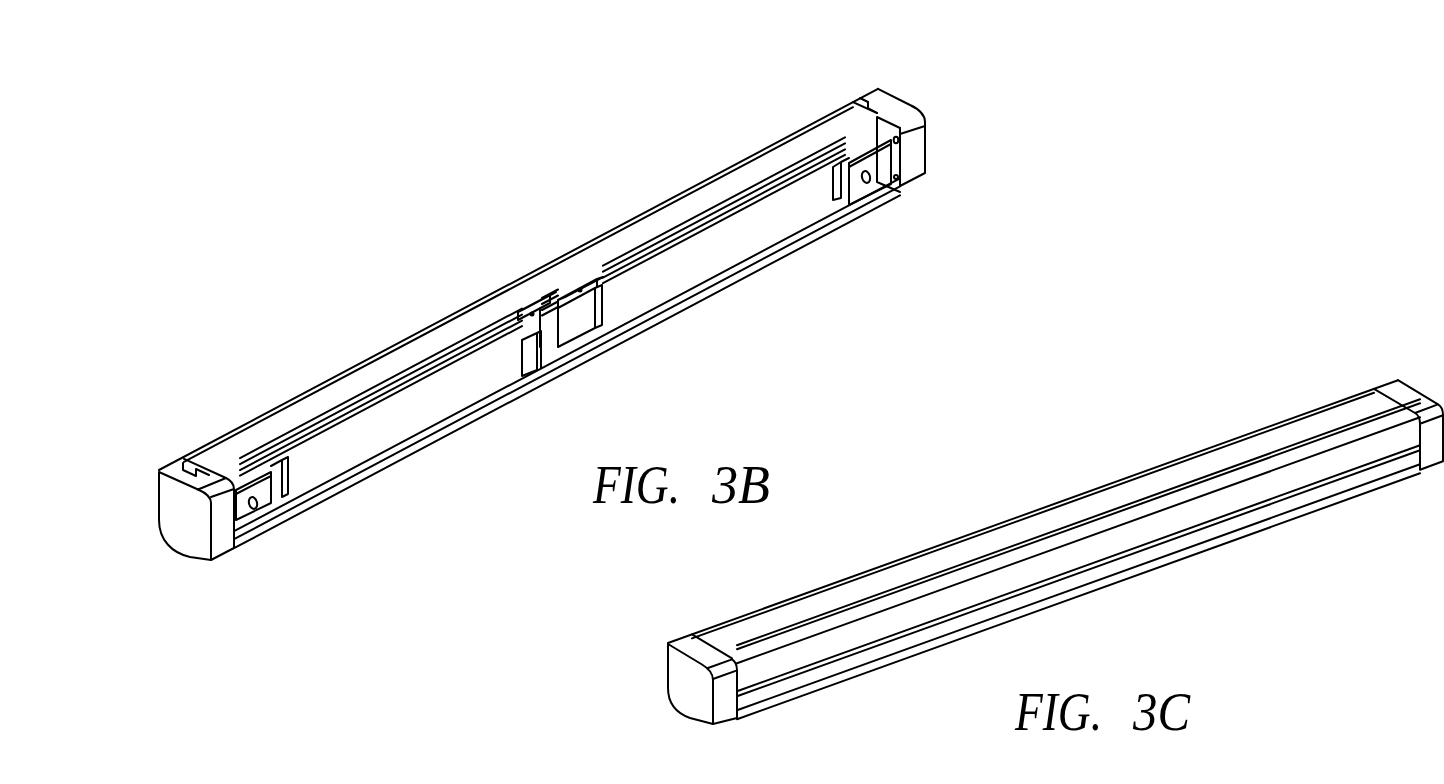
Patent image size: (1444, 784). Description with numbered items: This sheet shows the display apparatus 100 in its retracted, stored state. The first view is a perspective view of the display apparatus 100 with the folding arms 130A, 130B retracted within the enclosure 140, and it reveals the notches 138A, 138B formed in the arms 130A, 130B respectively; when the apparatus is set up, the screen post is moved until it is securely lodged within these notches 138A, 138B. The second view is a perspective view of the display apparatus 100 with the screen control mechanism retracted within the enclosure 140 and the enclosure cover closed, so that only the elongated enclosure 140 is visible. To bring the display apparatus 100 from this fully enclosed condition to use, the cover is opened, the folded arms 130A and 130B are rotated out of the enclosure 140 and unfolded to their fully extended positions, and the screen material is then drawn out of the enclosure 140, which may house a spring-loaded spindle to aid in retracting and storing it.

In FIG. 3B, the display apparatus 100 is at (513, 214).
In FIG. 3C, the display apparatus 100 is at (1145, 392).
In FIG. 3B, the folding arm 130A is at (342, 447).
In FIG. 3B, the folding arm 130B is at (711, 264).
In FIG. 3B, the notch 138A is at (527, 352).
In FIG. 3B, the notch 138B is at (570, 329).
In FIG. 3B, the enclosure 140 is at (195, 537).
In FIG. 3C, the enclosure 140 is at (1018, 513).